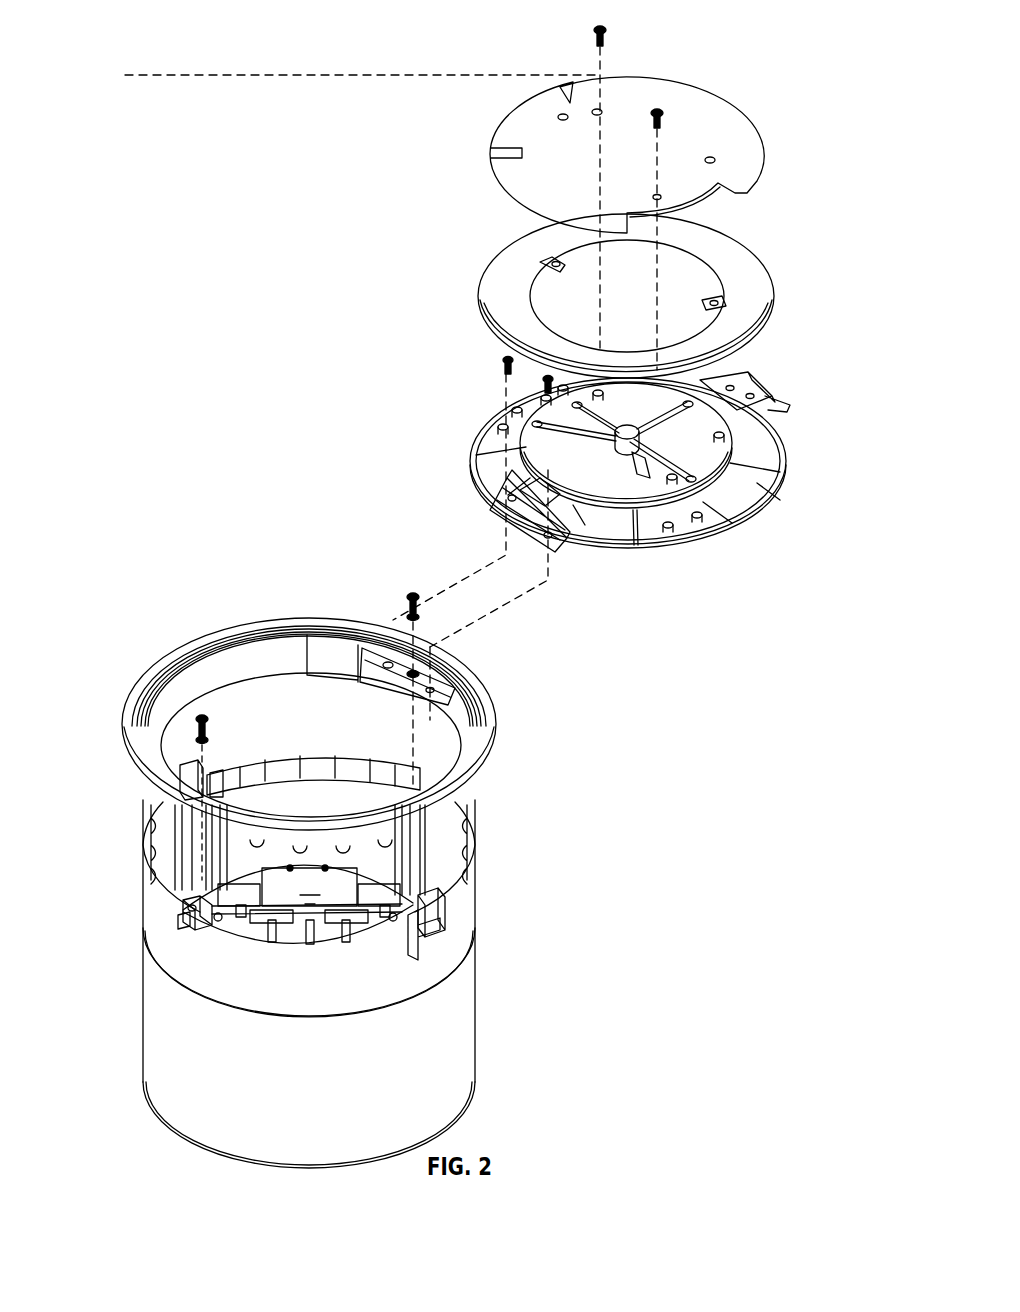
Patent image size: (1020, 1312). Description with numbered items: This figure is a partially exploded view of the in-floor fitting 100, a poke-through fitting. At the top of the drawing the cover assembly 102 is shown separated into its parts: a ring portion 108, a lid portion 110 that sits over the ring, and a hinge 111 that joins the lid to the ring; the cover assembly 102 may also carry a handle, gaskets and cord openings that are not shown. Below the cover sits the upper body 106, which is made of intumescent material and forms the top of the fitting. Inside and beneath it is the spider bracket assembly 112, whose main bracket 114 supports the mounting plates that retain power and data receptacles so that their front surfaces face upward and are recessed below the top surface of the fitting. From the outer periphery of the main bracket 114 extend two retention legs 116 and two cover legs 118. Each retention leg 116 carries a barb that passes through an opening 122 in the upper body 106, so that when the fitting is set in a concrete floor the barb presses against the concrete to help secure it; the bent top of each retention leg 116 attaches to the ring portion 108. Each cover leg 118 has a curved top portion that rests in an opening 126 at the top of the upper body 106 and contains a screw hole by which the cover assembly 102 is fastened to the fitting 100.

The in-floor fitting 100 is at (768, 56).
The cover assembly 102 is at (407, 380).
The upper body 106 is at (309, 962).
The ring portion 108 is at (333, 736).
The lid portion 110 is at (598, 502).
The hinge 111 is at (563, 521).
The spider bracket assembly 112 is at (359, 892).
The main bracket 114 is at (156, 917).
The retention leg 116 is at (313, 889).
The cover leg 118 is at (304, 883).
The opening 122 is at (472, 909).
The opening 126 is at (208, 948).